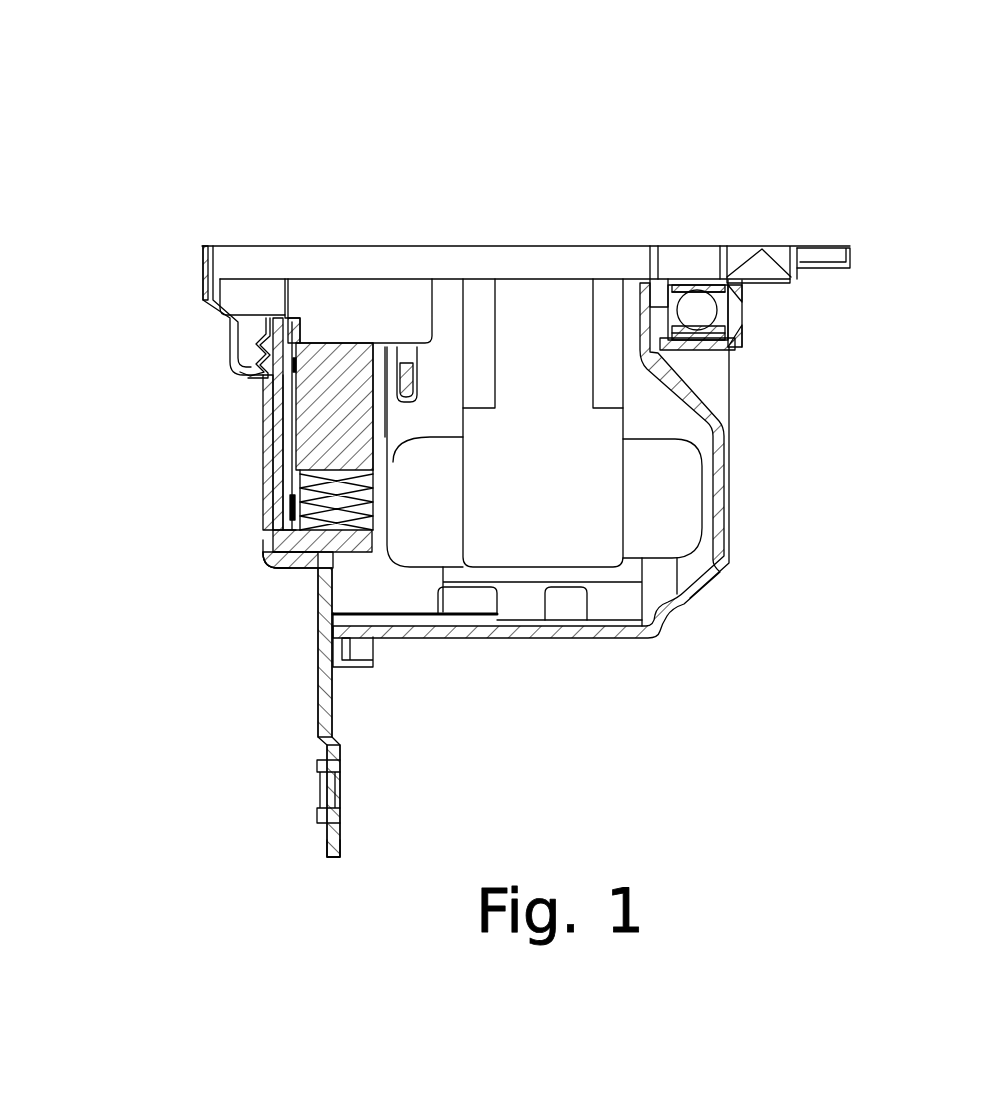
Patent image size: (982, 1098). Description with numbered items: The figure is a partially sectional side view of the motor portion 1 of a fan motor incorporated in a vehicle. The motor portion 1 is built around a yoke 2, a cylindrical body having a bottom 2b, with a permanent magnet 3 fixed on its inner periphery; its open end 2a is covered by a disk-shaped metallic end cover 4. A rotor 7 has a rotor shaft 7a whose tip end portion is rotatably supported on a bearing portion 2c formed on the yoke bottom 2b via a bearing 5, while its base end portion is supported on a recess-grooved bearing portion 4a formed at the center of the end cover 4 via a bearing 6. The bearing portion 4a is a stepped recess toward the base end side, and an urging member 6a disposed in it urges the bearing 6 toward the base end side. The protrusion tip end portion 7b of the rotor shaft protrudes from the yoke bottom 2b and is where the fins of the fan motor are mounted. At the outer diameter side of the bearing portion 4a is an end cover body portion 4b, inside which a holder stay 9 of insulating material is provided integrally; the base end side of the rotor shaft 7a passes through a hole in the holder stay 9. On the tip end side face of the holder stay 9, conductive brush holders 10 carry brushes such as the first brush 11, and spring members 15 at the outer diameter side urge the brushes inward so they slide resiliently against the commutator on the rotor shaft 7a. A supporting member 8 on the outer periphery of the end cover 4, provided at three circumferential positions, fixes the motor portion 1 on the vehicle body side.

The motor portion 1 is at (736, 77).
The yoke 2 is at (588, 643).
The open end 2a is at (375, 647).
The bottom 2b is at (722, 510).
The bearing portion 2c is at (737, 350).
The permanent magnet 3 is at (622, 605).
The end cover 4 is at (358, 672).
The bearing portion 4a is at (200, 265).
The end cover body portion 4b is at (262, 498).
The bearing 5 is at (697, 308).
The bearing 6 is at (254, 292).
The urging member 6a is at (232, 347).
The rotor 7 is at (566, 463).
The rotor shaft 7a is at (563, 262).
The protrusion tip end portion 7b is at (776, 258).
The supporting member 8 is at (325, 855).
The holder stay 9 is at (270, 565).
The brush holder 10 is at (393, 455).
The first brush 11 is at (262, 433).
The spring member 15 is at (331, 473).